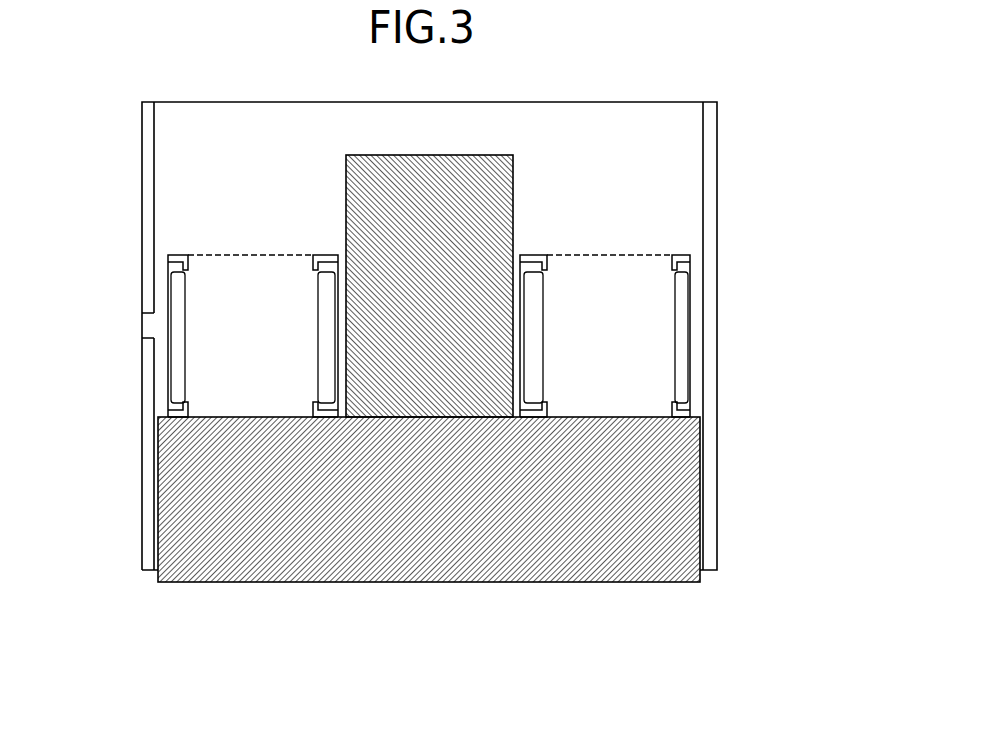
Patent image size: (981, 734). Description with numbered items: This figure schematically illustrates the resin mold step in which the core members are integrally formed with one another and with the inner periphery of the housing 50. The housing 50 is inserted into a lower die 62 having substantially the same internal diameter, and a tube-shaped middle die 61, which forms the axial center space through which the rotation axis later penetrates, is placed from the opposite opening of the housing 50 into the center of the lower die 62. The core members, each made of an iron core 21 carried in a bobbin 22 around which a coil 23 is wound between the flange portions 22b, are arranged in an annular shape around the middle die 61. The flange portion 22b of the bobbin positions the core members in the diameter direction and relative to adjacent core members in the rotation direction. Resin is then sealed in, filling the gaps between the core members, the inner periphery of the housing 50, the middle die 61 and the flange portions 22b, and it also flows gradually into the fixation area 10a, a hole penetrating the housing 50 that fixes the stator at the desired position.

The housing 50 is at (712, 178).
The fixation area 10a is at (138, 328).
The middle die 61 is at (506, 172).
The lower die 62 is at (678, 578).
The iron core 21 is at (606, 255).
The bobbin 22 is at (687, 262).
The flange portion 22b is at (690, 410).
The coil 23 is at (684, 308).